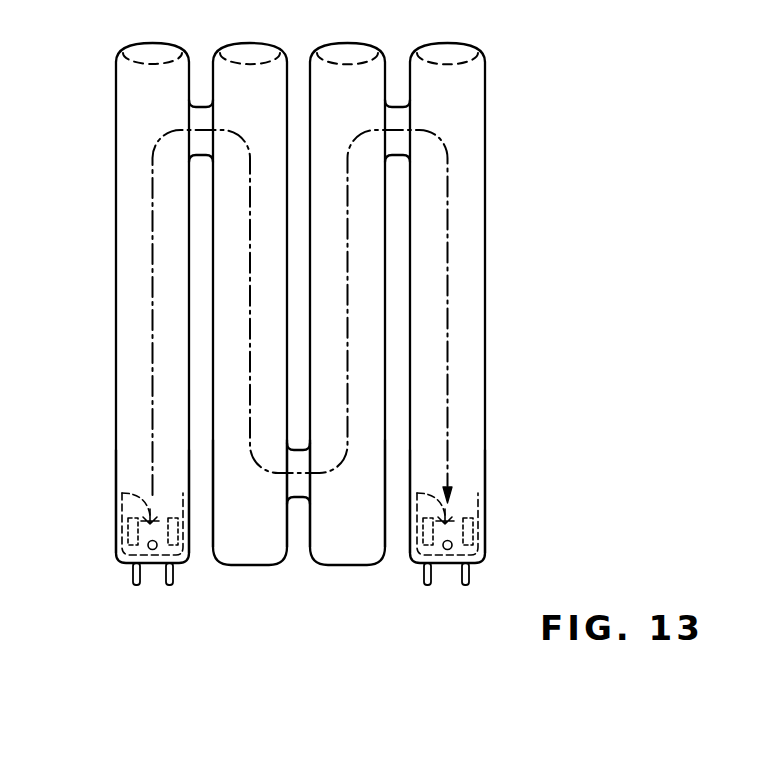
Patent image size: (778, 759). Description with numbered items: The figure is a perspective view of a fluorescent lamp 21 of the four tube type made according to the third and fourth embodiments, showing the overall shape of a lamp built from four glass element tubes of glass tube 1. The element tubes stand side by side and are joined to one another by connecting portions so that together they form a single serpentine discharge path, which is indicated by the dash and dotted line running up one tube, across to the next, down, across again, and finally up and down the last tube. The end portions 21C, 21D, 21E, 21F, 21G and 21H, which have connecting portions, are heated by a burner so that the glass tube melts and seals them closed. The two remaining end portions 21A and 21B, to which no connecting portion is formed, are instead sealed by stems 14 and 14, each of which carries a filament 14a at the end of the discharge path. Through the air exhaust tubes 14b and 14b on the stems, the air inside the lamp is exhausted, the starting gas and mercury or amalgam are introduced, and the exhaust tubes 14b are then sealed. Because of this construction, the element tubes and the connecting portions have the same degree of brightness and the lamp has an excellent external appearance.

The glass tube 1 is at (135, 203).
The stem 14 is at (148, 573).
The filament 14a is at (122, 493).
The air exhaust tube 14b is at (156, 560).
The fluorescent lamp 21 is at (506, 57).
The end portion 21A is at (122, 560).
The end portion 21B is at (483, 563).
The end portion 21C is at (152, 50).
The end portion 21D is at (247, 50).
The end portion 21E is at (247, 567).
The end portion 21F is at (340, 567).
The end portion 21G is at (345, 50).
The end portion 21H is at (443, 50).